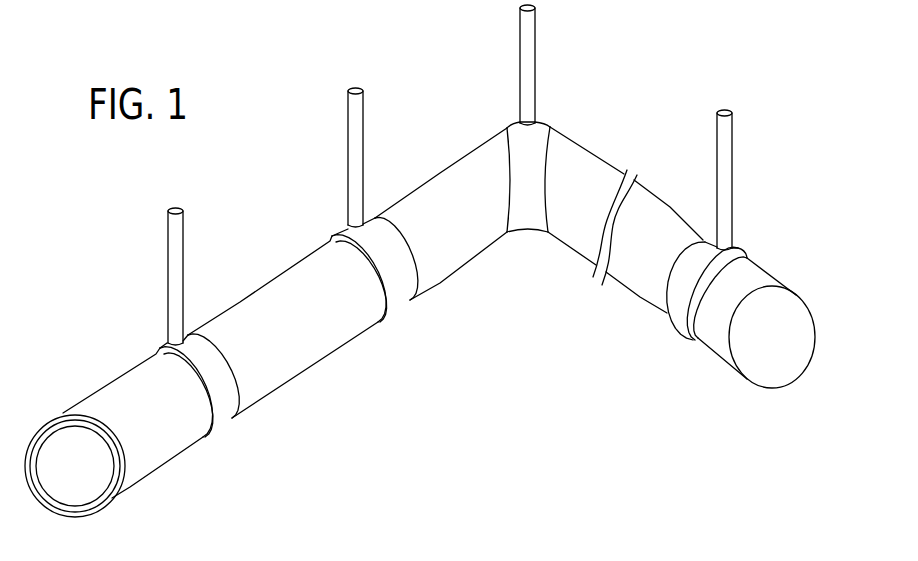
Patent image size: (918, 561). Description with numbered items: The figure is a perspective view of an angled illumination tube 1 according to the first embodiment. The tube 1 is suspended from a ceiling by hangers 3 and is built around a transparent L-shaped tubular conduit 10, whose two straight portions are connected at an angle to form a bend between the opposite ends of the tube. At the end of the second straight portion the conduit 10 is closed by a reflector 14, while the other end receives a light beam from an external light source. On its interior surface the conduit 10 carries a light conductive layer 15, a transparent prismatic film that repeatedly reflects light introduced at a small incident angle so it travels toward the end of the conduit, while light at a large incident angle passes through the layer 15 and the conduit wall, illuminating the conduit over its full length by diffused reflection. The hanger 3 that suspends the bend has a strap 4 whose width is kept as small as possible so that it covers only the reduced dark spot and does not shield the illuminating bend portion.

The angled illumination tube 1 is at (420, 271).
The hanger 3 is at (346, 140).
The strap 4 is at (523, 157).
The tubular conduit 10 is at (127, 402).
The reflector 14 is at (772, 328).
The light conductive layer 15 is at (95, 496).